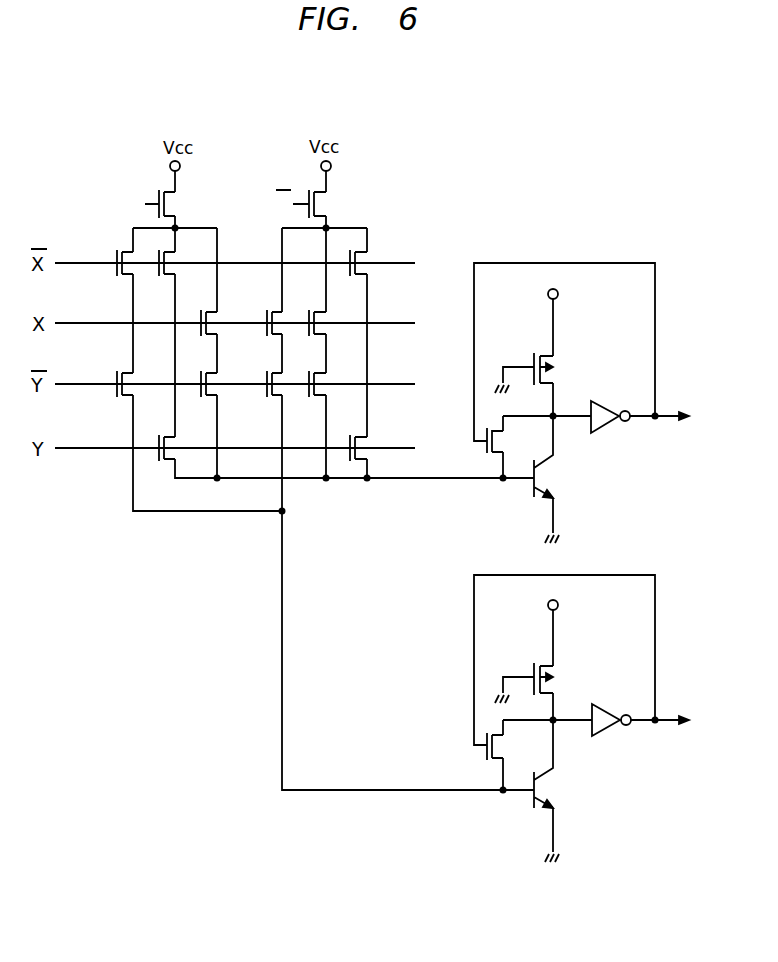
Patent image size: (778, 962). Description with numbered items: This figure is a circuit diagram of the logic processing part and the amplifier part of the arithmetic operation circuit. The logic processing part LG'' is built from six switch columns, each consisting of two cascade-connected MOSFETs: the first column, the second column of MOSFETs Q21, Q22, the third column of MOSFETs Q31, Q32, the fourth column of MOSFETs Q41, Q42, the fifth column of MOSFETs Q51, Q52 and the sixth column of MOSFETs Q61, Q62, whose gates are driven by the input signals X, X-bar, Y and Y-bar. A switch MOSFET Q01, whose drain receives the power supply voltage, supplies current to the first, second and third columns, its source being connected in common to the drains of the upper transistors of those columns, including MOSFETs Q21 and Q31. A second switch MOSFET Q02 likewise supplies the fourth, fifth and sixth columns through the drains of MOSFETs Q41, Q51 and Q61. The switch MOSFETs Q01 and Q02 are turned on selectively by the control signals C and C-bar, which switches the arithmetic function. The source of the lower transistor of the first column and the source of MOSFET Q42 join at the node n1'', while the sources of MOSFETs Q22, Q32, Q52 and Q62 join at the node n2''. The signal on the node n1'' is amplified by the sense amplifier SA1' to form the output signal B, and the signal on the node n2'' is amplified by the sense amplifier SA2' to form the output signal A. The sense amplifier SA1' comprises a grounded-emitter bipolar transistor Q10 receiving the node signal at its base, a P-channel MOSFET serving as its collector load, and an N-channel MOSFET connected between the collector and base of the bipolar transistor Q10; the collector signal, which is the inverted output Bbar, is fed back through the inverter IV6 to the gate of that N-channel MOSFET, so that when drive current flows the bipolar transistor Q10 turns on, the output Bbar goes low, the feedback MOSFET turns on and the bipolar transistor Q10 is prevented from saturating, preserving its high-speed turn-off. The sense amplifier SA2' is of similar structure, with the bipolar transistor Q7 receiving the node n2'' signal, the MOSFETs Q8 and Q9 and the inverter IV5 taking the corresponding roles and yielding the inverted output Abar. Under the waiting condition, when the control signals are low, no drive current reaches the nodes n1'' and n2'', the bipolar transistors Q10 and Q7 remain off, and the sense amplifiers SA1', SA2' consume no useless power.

The switch MOSFET Q01 is at (168, 209).
The switch MOSFET Q02 is at (318, 209).
The MOSFET Q21 is at (185, 255).
The MOSFET Q22 is at (185, 442).
The MOSFET Q31 is at (227, 316).
The MOSFET Q32 is at (228, 378).
The MOSFET Q41 is at (274, 303).
The MOSFET Q42 is at (273, 367).
The MOSFET Q51 is at (335, 316).
The MOSFET Q52 is at (335, 378).
The MOSFET Q61 is at (376, 256).
The MOSFET Q62 is at (376, 442).
The bipolar transistor Q7 is at (552, 457).
The MOS transistor Q8 is at (505, 447).
The depletion load transistor Q9 is at (524, 377).
The bipolar transistor Q10 is at (556, 764).
The inverter IV5 is at (607, 401).
The inverter IV6 is at (610, 707).
The logic processing part LG'' is at (207, 550).
The sense amplifier SA1' is at (585, 721).
The sense amplifier SA2' is at (580, 406).
The node n1'' is at (377, 767).
The node n2'' is at (399, 499).
The inverted output A Abar is at (573, 410).
The output signal B-bar Bbar is at (588, 667).